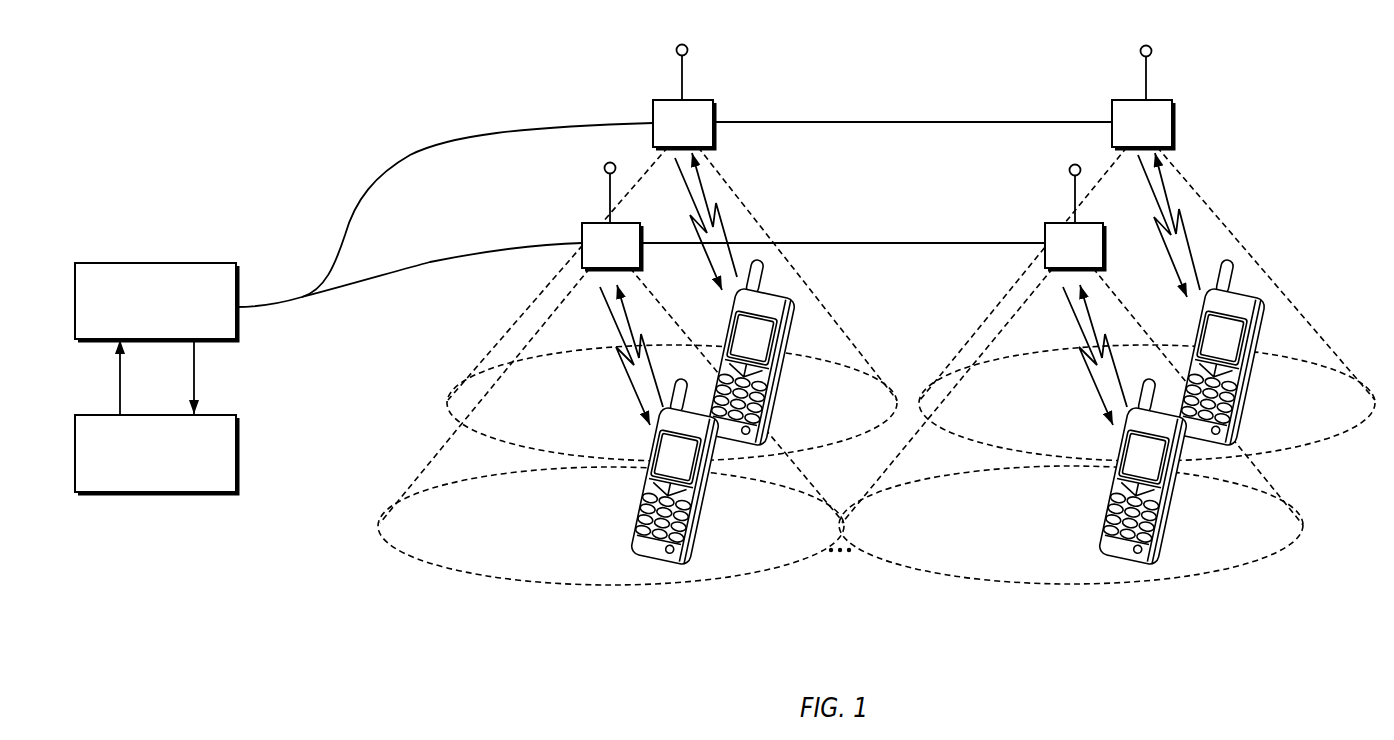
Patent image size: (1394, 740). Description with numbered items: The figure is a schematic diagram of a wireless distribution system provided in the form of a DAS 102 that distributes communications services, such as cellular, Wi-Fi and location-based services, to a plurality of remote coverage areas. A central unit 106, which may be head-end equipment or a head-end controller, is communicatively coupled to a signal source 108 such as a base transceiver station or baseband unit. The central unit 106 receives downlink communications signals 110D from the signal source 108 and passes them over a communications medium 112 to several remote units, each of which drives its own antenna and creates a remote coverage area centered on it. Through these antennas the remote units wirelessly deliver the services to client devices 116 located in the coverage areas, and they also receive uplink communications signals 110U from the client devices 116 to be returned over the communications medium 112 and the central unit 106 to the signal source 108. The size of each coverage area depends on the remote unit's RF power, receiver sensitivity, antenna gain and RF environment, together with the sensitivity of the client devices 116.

The distributed antenna system (DAS) 102 is at (838, 70).
The central unit 106 is at (171, 312).
The signal source 108 is at (172, 464).
The downlink communications signals 110D is at (117, 390).
The uplink communications signals 110U is at (197, 390).
The communications medium 112 is at (470, 140).
The client devices 116 is at (793, 330).